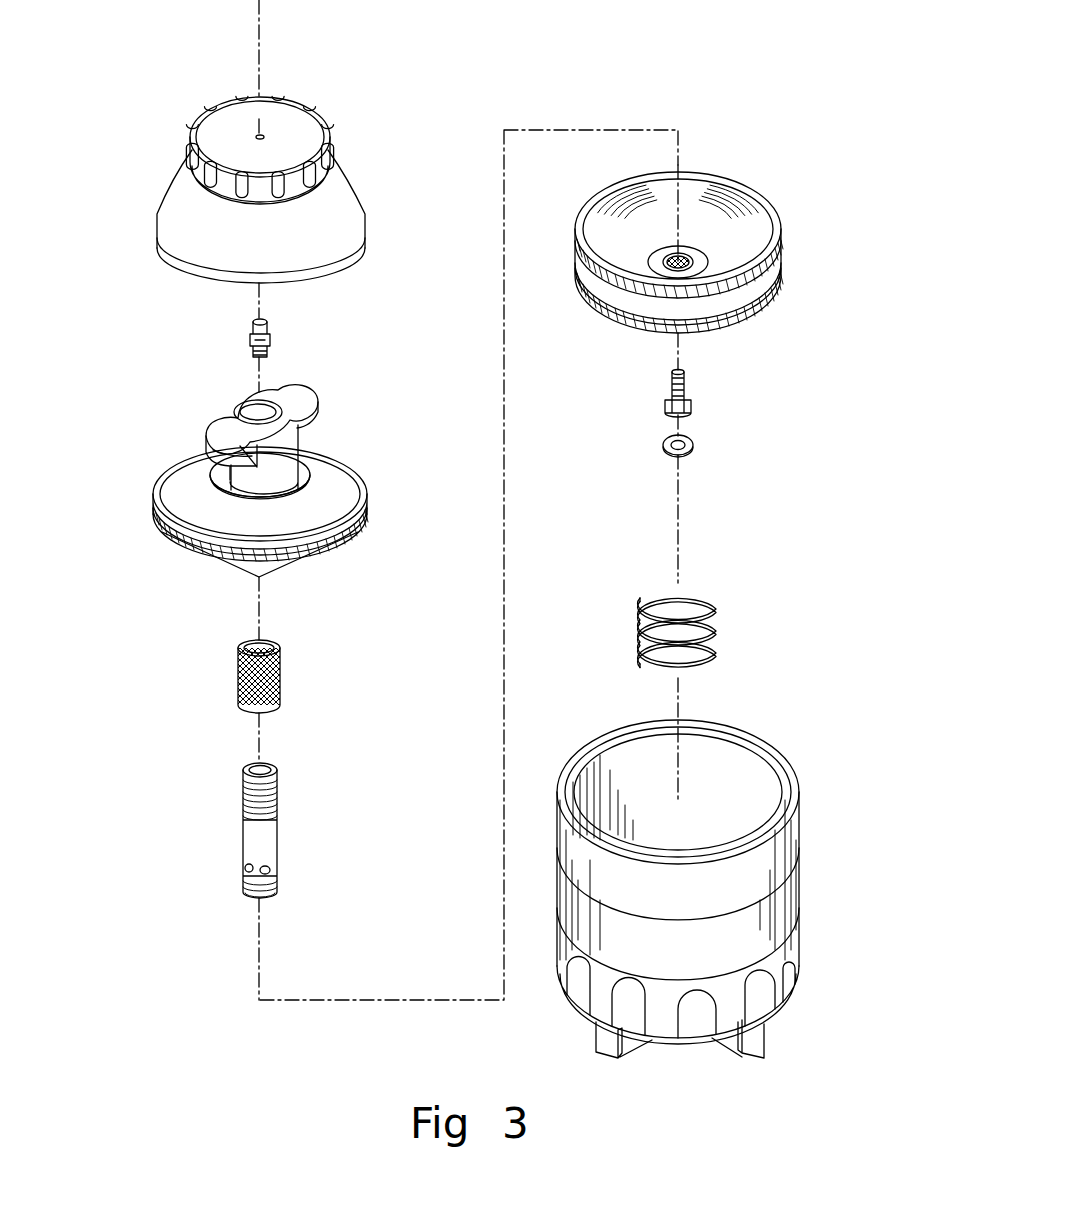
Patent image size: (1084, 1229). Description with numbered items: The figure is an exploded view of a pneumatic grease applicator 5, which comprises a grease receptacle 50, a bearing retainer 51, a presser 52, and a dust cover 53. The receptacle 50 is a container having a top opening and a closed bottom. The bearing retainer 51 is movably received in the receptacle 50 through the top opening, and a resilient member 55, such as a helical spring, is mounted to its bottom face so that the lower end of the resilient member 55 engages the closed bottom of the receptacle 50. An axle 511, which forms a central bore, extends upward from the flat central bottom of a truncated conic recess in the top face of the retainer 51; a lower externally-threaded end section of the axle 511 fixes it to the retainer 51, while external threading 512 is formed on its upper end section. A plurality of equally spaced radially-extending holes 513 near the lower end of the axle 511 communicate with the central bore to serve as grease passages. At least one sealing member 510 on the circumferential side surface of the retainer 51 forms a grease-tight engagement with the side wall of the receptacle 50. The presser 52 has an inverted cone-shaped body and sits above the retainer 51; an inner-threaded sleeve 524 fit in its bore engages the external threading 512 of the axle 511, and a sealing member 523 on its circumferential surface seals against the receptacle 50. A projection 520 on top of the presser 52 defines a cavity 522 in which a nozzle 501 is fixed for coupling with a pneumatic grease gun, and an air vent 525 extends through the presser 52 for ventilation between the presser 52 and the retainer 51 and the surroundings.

The pneumatic grease applicator 5 is at (614, 95).
The dust cover 53 is at (343, 188).
The nozzle 501 is at (273, 333).
The presser 52 is at (284, 466).
The projection 520 is at (289, 453).
The cavity 522 is at (240, 397).
The sealing member 523 is at (367, 517).
The air vent 525 is at (200, 516).
The inner-threaded sleeve 524 is at (282, 675).
The axle 511 is at (363, 824).
The external threading 512 is at (277, 797).
The radially-extending holes 513 is at (273, 873).
The bearing retainer 51 is at (743, 252).
The sealing member 510 is at (783, 248).
The resilient member 55 is at (700, 610).
The grease receptacle 50 is at (797, 900).